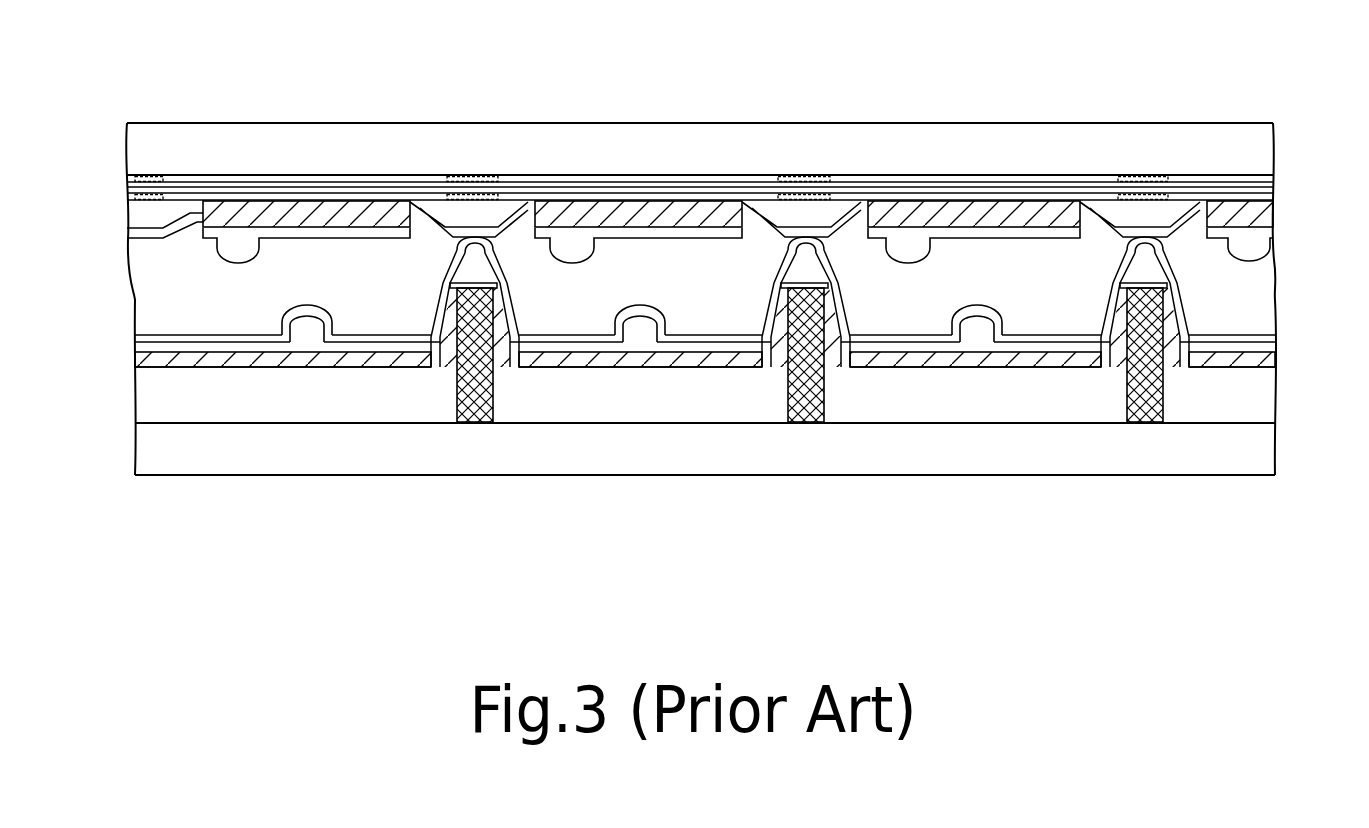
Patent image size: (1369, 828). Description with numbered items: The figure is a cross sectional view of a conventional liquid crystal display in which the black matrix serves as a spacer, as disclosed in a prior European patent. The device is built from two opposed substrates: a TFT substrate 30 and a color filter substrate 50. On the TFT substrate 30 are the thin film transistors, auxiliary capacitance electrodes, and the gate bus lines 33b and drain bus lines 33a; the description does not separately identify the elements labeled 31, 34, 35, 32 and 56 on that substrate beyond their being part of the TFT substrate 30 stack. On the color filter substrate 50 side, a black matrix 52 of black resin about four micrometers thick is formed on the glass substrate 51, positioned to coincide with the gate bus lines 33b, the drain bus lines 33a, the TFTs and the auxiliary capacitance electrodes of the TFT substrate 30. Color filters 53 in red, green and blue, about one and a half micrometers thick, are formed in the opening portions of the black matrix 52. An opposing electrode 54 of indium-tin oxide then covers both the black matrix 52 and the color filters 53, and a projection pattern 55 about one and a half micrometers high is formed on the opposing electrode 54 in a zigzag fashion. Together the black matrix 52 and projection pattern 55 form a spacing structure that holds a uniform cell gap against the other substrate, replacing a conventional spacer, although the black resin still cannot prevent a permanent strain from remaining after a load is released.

The TFT substrate 30 is at (1295, 120).
The upper transparent substrate 31 is at (433, 143).
The color filter layer 32 is at (1033, 213).
The drain bus lines 33a is at (775, 176).
The gate bus lines 33b is at (818, 175).
The multilayer thin film stack 34 is at (116, 175).
The overcoat layer 35 is at (913, 243).
The color filter substrate 50 is at (1297, 333).
The glass substrate 51 is at (1183, 450).
The black matrix 52 is at (1143, 402).
The color filters 53 is at (957, 393).
The opposing electrode 54 is at (650, 355).
The projection pattern 55 is at (477, 265).
The passivation layer 56 is at (570, 342).